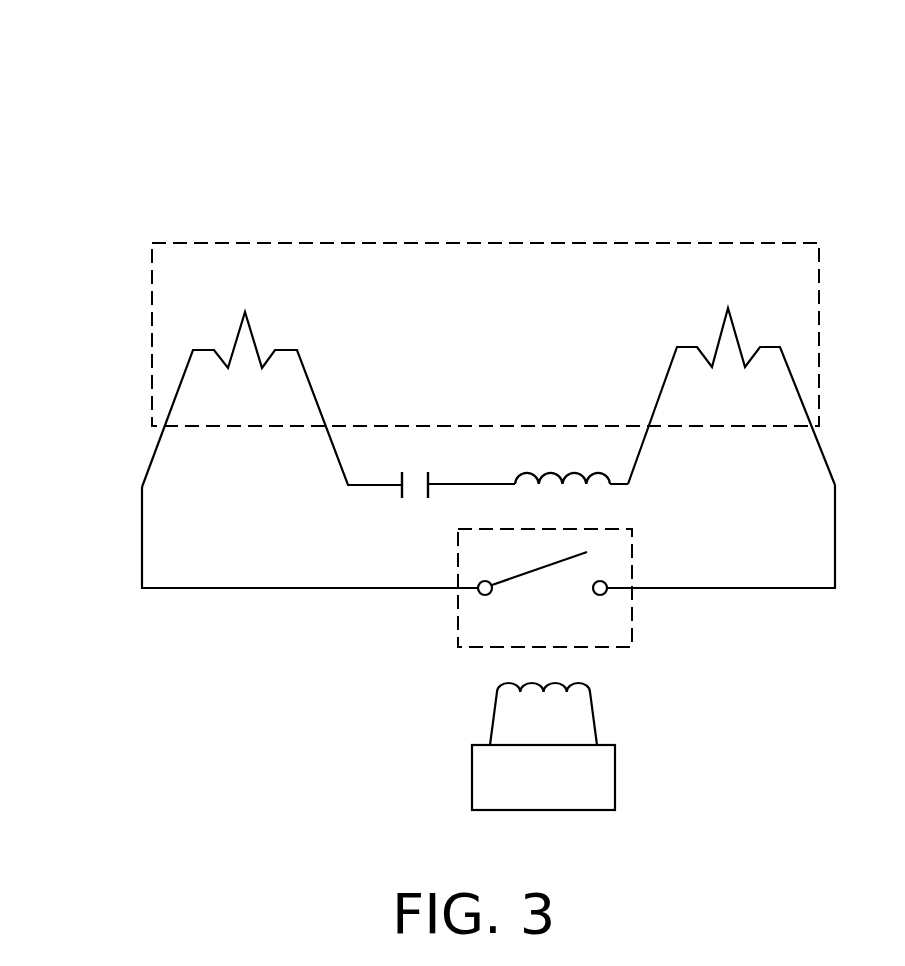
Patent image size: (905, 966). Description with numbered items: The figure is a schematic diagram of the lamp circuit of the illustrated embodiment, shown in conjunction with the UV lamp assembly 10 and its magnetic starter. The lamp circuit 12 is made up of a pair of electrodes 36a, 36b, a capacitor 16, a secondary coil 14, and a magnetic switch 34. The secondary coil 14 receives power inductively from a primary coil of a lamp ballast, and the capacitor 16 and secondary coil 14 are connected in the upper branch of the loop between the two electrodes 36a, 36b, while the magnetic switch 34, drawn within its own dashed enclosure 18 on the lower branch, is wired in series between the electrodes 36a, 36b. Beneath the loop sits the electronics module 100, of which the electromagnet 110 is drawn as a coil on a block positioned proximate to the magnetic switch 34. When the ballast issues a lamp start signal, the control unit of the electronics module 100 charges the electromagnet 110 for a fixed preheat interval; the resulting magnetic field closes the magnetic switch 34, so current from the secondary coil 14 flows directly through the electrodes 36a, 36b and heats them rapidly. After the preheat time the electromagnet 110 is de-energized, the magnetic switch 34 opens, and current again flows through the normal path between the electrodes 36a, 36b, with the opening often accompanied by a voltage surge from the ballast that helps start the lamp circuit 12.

The UV lamp assembly 10 is at (645, 133).
The lamp circuit 12 is at (138, 545).
The secondary coil 14 is at (600, 473).
The capacitor 16 is at (433, 477).
The tuning region 18 is at (833, 224).
The magnetic switch 34 is at (632, 568).
The electrode 36a is at (250, 328).
The electrode 36b is at (720, 330).
The electronics module 100 is at (645, 745).
The electromagnet 110 is at (497, 690).